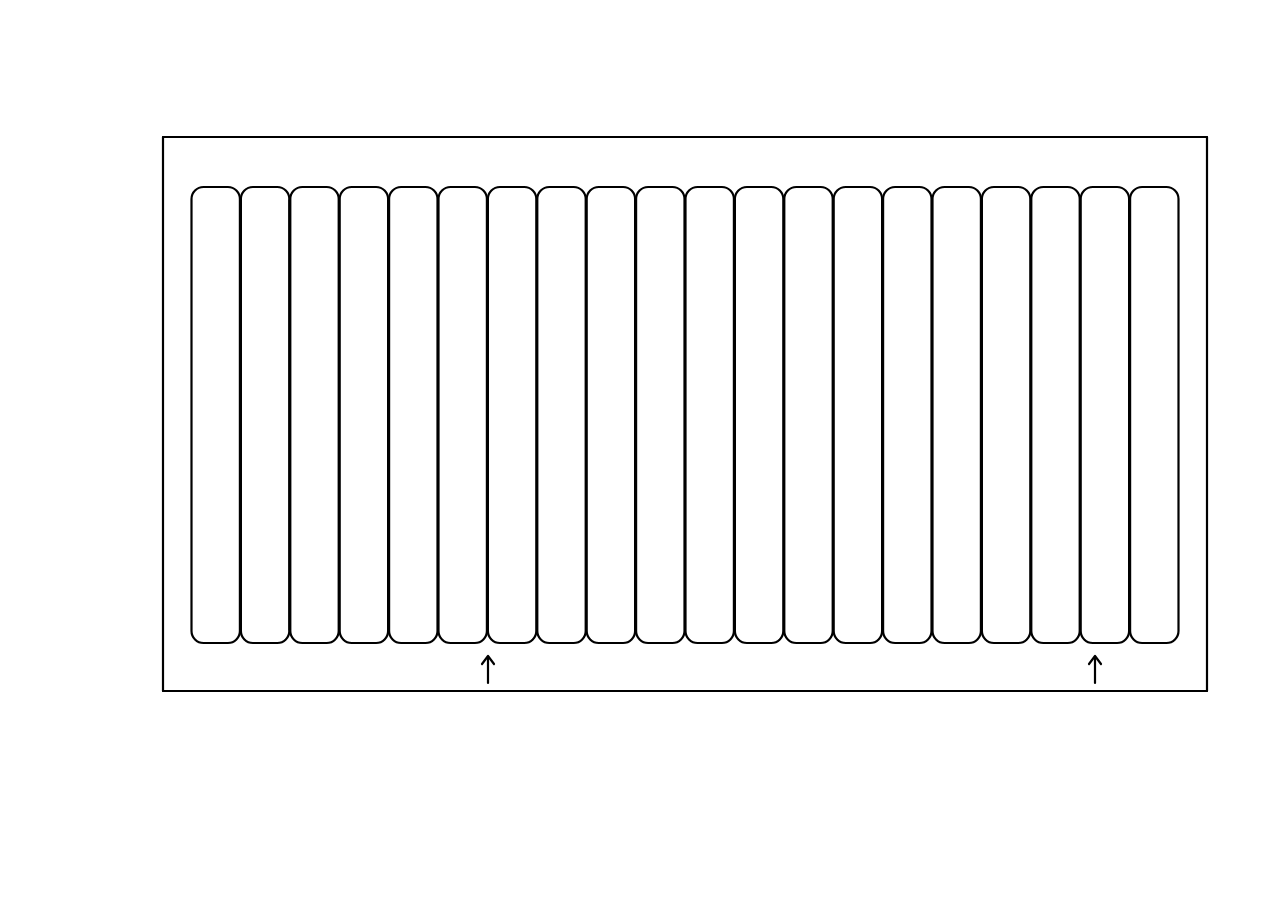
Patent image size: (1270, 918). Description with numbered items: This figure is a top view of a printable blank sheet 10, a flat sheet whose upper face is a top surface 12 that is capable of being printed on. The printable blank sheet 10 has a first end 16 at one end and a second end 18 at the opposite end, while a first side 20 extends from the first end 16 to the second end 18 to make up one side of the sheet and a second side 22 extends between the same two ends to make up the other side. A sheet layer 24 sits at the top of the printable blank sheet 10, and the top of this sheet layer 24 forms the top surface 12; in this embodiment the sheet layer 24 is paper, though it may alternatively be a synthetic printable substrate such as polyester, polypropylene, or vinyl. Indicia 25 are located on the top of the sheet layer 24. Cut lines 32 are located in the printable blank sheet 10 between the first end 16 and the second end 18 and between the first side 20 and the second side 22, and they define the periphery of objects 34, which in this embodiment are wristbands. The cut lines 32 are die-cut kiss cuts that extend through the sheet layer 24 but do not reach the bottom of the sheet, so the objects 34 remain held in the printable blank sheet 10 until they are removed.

The printable blank sheet 10 is at (201, 99).
The top surface 12 is at (339, 160).
The first end 16 is at (162, 300).
The second end 18 is at (1208, 375).
The first side 20 is at (613, 137).
The second side 22 is at (702, 692).
The sheet layer 24 is at (770, 160).
The indicia 25 is at (353, 677).
The cut lines 32 is at (290, 423).
The objects 34 is at (265, 612).